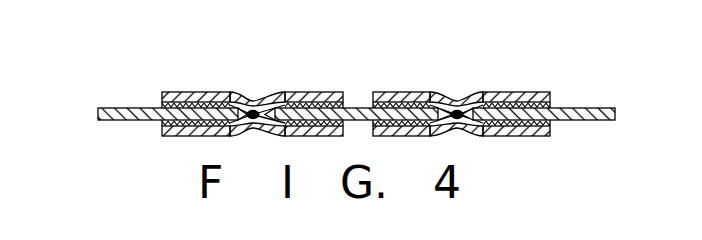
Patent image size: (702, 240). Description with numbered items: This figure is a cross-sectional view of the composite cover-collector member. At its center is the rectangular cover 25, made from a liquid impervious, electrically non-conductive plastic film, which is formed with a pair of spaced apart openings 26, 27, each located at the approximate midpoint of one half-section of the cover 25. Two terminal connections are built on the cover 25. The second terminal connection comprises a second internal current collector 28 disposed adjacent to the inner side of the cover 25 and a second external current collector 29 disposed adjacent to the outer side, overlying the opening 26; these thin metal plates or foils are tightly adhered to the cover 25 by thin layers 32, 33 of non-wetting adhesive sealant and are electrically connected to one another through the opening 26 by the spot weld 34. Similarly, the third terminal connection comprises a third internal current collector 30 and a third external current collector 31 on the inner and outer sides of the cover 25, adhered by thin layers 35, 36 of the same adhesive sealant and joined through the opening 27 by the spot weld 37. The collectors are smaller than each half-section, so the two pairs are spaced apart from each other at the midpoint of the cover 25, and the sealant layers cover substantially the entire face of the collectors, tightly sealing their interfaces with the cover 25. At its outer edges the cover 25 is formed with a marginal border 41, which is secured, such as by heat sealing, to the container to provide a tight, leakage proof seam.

The cover 25 is at (360, 110).
The opening 26 is at (484, 107).
The opening 27 is at (266, 106).
The second internal current collector 28 is at (428, 130).
The second external current collector 29 is at (430, 105).
The third internal current collector 30 is at (188, 128).
The third external current collector 31 is at (178, 98).
The layer of non-wetting adhesive sealant 32 is at (416, 125).
The layer of non-wetting adhesive sealant 33 is at (400, 100).
The spot weld 34 is at (458, 112).
The layer of adhesive sealant 35 is at (220, 124).
The layer of adhesive sealant 36 is at (212, 106).
The spot weld 37 is at (252, 110).
The marginal border 41 is at (137, 112).